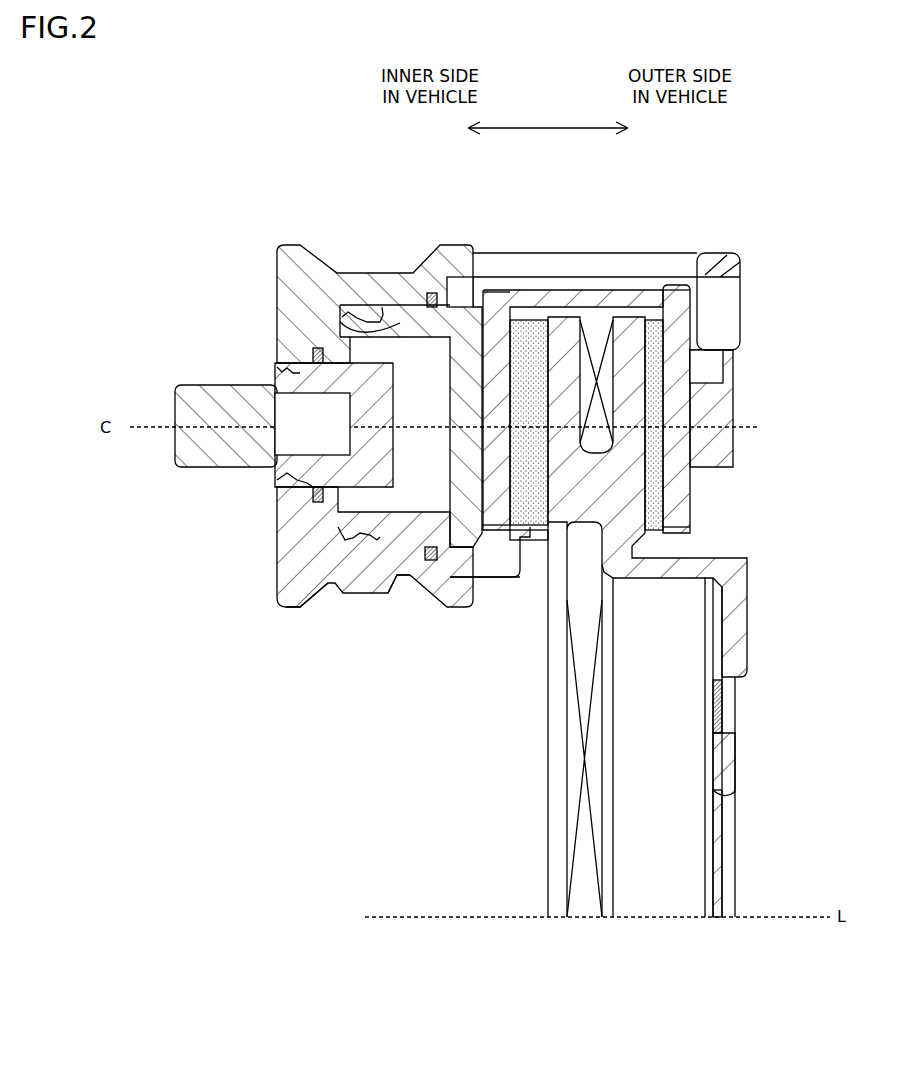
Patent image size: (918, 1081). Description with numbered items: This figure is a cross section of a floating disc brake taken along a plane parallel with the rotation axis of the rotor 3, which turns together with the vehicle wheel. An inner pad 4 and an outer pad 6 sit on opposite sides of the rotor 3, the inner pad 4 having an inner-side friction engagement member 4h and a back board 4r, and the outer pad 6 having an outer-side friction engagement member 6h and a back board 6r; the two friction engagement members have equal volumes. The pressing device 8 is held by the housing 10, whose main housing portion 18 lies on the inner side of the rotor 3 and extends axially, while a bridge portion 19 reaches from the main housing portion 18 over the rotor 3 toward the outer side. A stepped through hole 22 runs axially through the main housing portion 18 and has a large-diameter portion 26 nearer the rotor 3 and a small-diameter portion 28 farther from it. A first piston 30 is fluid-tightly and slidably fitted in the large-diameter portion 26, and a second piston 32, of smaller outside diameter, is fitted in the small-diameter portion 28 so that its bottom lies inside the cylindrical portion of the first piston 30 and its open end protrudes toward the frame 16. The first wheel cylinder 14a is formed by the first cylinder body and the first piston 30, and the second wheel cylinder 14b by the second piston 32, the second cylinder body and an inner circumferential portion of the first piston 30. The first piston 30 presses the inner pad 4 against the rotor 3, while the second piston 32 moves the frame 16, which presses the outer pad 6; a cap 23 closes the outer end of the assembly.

The housing 10 is at (326, 436).
The first wheel cylinder 14a is at (357, 292).
The through hole 22 is at (303, 338).
The second piston 32 is at (303, 383).
The pressing device 8 is at (251, 400).
The frame 16 is at (200, 400).
The second wheel cylinder 14b is at (245, 480).
The small-diameter portion 28 is at (272, 478).
The main housing portion 18 is at (297, 600).
The large-diameter portion 26 is at (380, 548).
The first piston 30 is at (412, 537).
The inner-side friction engagement member 4h is at (522, 565).
The back board 4r is at (496, 283).
The inner pad 4 is at (550, 414).
The bridge portion 19 is at (566, 238).
The outer pad 6 is at (672, 557).
The back board 6r is at (670, 303).
The cap 23 is at (695, 305).
The outer-side friction engagement member 6h is at (652, 503).
The rotor 3 is at (723, 790).